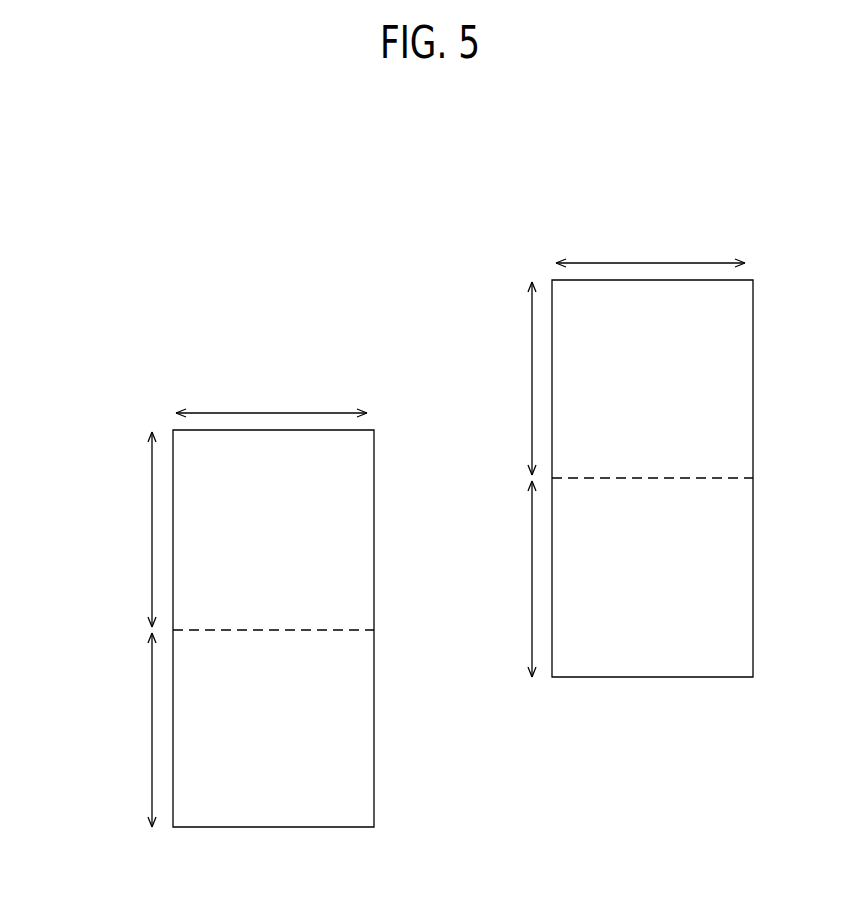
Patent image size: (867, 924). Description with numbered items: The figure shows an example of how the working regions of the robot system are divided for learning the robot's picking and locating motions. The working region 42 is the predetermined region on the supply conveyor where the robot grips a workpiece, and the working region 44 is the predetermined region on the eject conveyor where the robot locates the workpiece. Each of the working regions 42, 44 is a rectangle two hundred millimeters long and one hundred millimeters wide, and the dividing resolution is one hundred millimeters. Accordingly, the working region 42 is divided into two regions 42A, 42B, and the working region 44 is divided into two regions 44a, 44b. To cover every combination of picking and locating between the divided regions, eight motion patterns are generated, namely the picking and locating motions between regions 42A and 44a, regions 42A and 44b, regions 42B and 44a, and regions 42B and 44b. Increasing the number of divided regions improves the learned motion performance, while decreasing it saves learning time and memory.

The working region 42 is at (520, 246).
The divided region 42A is at (680, 398).
The divided region 42B is at (680, 594).
The working region 44 is at (135, 350).
The divided region 44a is at (298, 542).
The divided region 44b is at (298, 738).